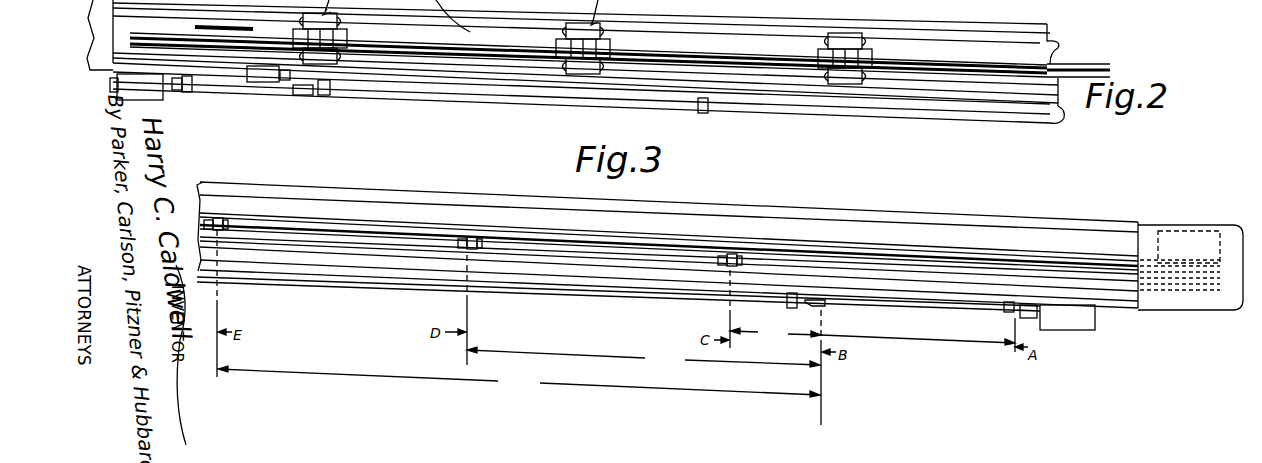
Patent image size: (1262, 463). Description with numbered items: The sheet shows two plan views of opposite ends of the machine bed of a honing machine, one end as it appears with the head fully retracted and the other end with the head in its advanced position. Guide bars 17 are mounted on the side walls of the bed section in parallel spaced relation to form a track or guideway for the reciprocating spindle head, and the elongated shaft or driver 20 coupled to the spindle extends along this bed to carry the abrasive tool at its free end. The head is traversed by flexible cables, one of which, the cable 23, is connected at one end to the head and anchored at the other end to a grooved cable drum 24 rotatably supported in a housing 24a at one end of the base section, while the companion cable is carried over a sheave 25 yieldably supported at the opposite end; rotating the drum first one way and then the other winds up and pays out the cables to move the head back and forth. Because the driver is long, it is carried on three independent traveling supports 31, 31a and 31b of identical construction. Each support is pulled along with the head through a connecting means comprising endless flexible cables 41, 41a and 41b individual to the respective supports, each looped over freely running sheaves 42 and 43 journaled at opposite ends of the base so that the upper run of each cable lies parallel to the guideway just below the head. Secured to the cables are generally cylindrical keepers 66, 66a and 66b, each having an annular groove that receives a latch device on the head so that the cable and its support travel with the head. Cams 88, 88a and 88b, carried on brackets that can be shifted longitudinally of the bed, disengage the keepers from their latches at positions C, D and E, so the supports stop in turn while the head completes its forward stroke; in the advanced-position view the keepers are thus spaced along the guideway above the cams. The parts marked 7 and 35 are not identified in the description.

In FIG. 2, the lower rail end 7 is at (1062, 101).
In FIG. 2, the guide bars 17 is at (1065, 44).
In FIG. 2, the driver 20 is at (1090, 70).
In FIG. 3, the flexible cable 23 is at (968, 254).
In FIG. 3, the cable drum 24 is at (1173, 231).
In FIG. 3, the housing 24a is at (1232, 236).
In FIG. 2, the sheave 25 is at (197, 26).
In FIG. 3, the traveling support 31 is at (872, 335).
In FIG. 3, the traveling support 31a is at (643, 359).
In FIG. 2, the traveling support 31b is at (849, 38).
In FIG. 3, the traveling support 31b is at (519, 381).
In FIG. 2, the clamp 35 is at (719, 37).
In FIG. 3, the endless flexible cable 41 is at (856, 265).
In FIG. 3, the endless flexible cable 41a is at (898, 262).
In FIG. 3, the endless flexible cable 41b is at (952, 262).
In FIG. 2, the sheave 42 is at (130, 40).
In FIG. 3, the sheave 43 is at (1123, 277).
In FIG. 3, the keeper 66 is at (723, 256).
In FIG. 3, the keeper 66a is at (464, 240).
In FIG. 3, the keeper 66b is at (207, 221).
In FIG. 3, the cam 88 is at (733, 255).
In FIG. 3, the cam 88a is at (472, 238).
In FIG. 3, the cam 88b is at (218, 220).